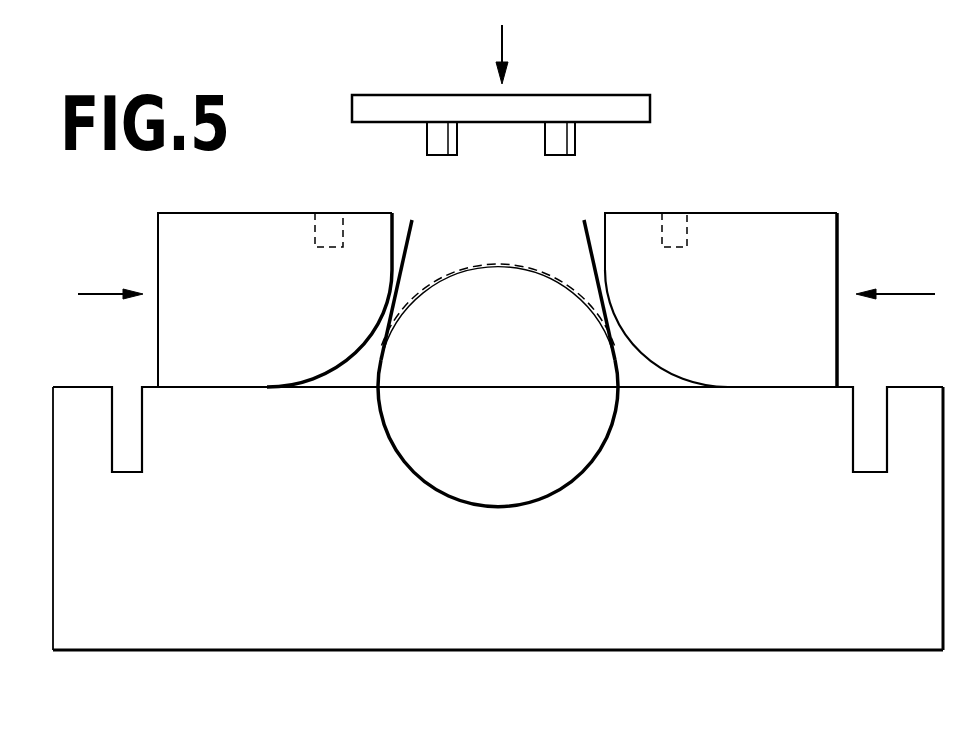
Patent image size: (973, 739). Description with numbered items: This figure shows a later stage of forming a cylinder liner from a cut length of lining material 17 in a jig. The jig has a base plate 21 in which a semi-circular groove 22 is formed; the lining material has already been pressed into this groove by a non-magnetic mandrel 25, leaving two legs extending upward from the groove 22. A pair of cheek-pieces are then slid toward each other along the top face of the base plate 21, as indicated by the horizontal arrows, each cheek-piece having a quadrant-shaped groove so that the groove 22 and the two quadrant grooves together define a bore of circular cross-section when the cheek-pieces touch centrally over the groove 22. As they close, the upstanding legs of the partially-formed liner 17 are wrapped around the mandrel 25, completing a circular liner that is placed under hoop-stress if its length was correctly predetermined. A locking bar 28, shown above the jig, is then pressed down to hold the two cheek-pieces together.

The cut length of lining material 17 is at (407, 240).
The base plate 21 is at (515, 618).
The semi-circular groove 22 is at (541, 493).
The mandrel 25 is at (514, 381).
The locking bar 28 is at (619, 102).